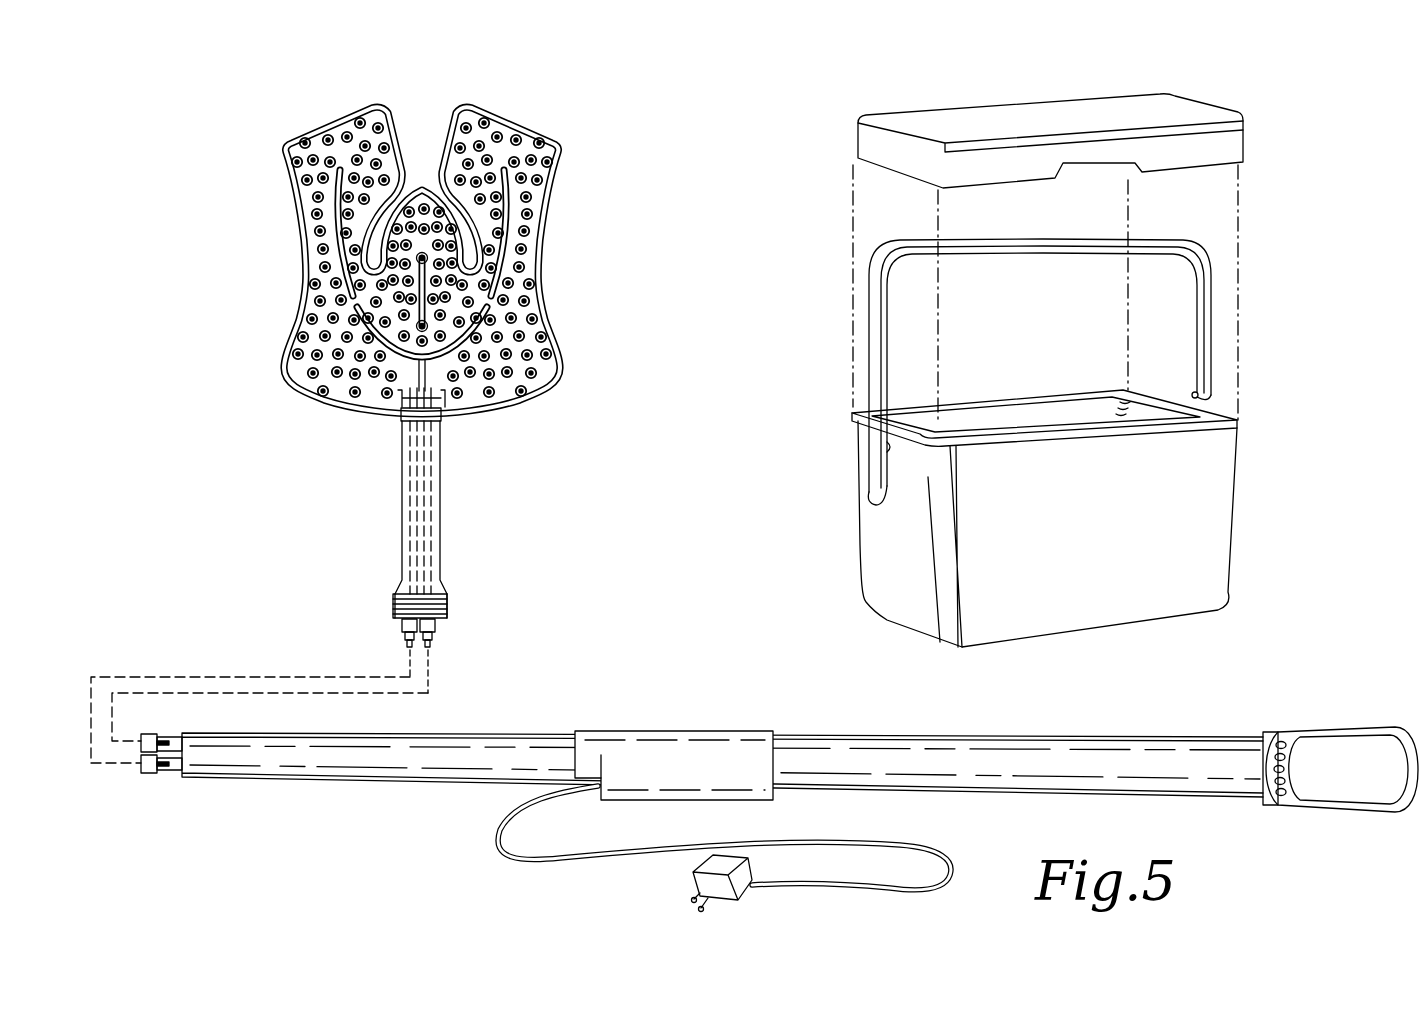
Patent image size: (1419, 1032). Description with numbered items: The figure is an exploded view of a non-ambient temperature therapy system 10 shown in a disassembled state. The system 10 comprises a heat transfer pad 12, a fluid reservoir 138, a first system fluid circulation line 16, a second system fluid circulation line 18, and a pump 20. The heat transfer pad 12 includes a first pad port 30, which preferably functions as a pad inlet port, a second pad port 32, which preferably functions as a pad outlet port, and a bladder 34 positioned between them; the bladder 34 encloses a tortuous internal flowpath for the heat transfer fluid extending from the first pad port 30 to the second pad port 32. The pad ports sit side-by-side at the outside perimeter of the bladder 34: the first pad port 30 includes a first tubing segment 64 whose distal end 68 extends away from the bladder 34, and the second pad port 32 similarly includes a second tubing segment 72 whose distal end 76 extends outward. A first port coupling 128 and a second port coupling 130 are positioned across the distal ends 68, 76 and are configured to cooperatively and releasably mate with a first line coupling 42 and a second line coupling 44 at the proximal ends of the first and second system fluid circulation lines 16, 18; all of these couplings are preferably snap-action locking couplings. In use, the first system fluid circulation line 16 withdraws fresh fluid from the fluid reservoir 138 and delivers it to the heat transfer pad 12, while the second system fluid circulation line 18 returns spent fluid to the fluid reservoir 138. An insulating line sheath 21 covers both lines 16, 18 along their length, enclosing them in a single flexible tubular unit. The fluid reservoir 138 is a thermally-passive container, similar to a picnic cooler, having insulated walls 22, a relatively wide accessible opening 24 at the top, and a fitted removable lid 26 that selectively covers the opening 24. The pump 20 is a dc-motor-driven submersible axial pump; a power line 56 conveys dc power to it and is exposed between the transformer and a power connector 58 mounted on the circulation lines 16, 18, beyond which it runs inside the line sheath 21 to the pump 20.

The non-ambient temperature therapy system 10 is at (1288, 377).
The heat transfer pad 12 is at (517, 120).
The first system fluid circulation line 16 is at (165, 740).
The second system fluid circulation line 18 is at (168, 767).
The pump 20 is at (1367, 729).
The insulating line sheath 21 is at (484, 736).
The insulated walls 22 is at (977, 417).
The accessible opening 24 is at (1023, 417).
The fitted removable lid 26 is at (1212, 153).
The first pad port 30 is at (437, 430).
The second pad port 32 is at (403, 430).
The bladder 34 is at (547, 298).
The first line coupling 42 is at (151, 736).
The second line coupling 44 is at (150, 774).
The power line 56 is at (845, 845).
The power connector 58 is at (636, 738).
The first tubing segment 64 is at (428, 512).
The distal end of first tubing segment 68 is at (427, 590).
The second tubing segment 72 is at (410, 517).
The distal end of second tubing segment 76 is at (410, 590).
The first port coupling 128 is at (440, 640).
The second port coupling 130 is at (403, 637).
The fluid reservoir 138 is at (890, 530).